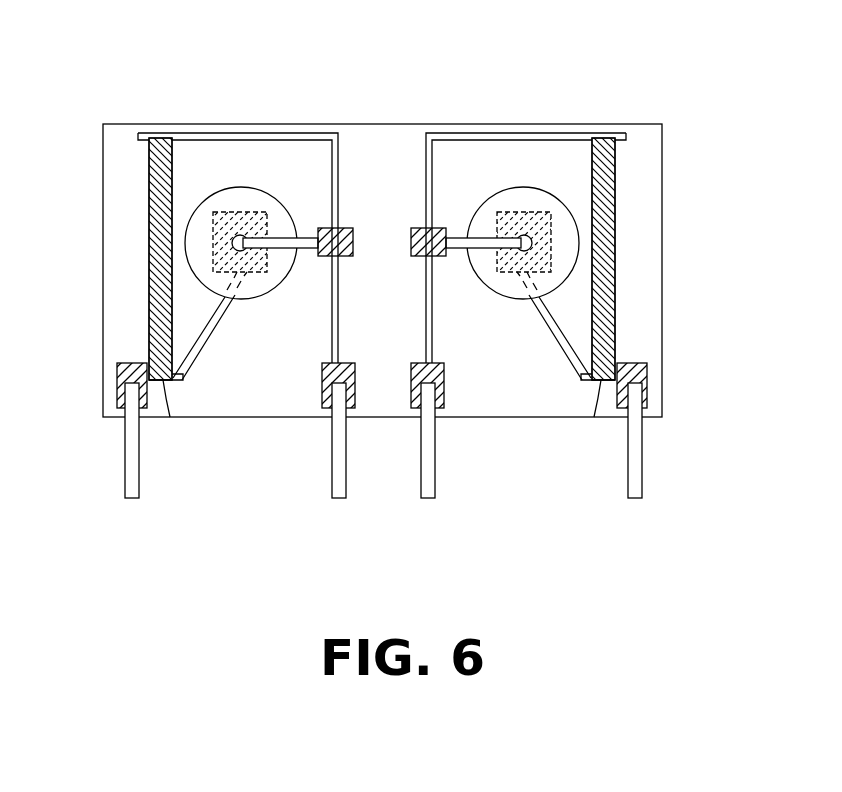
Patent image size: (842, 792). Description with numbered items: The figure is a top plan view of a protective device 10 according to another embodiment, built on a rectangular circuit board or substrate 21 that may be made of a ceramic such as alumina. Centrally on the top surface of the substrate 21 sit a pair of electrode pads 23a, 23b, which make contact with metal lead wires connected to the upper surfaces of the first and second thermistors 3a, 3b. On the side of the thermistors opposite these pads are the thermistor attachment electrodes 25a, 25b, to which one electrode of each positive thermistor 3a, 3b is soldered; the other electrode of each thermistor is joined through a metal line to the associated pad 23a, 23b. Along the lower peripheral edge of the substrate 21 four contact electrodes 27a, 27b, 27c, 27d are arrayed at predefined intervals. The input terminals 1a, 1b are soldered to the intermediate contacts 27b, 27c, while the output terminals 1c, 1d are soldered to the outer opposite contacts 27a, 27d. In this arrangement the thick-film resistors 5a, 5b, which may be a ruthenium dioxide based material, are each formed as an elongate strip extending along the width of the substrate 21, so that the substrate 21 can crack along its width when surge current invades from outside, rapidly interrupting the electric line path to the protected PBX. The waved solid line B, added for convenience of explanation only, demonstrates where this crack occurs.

The protective device 10 is at (78, 36).
The substrate 21 is at (372, 145).
The thick-film resistive element 5a is at (153, 240).
The thick-film resistive element 5b is at (606, 187).
The waved solid line B is at (160, 190).
The first thermistor 3a is at (197, 238).
The second thermistor 3b is at (570, 265).
The thermistor attachment electrode 25a is at (253, 212).
The thermistor attachment electrode 25b is at (497, 215).
The electrode pad 23a is at (343, 230).
The electrode pad 23b is at (425, 230).
The contact electrode 27a is at (121, 405).
The contact electrode 27b is at (327, 405).
The contact electrode 27c is at (437, 405).
The contact electrode 27d is at (648, 378).
The input terminal 1a is at (337, 478).
The input terminal 1b is at (430, 478).
The output terminal 1c is at (131, 478).
The output terminal 1d is at (636, 482).